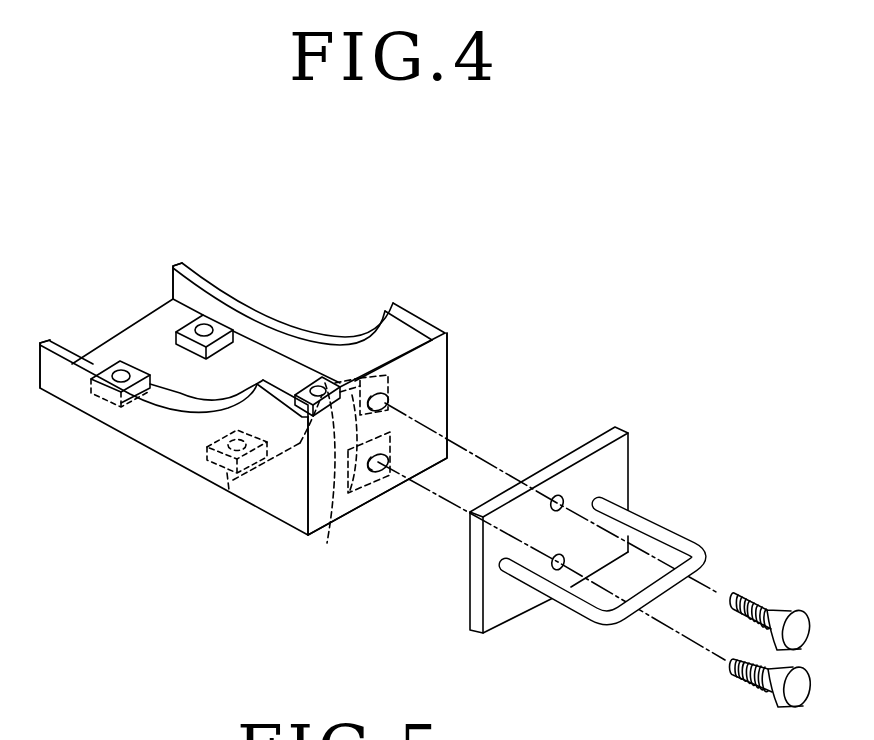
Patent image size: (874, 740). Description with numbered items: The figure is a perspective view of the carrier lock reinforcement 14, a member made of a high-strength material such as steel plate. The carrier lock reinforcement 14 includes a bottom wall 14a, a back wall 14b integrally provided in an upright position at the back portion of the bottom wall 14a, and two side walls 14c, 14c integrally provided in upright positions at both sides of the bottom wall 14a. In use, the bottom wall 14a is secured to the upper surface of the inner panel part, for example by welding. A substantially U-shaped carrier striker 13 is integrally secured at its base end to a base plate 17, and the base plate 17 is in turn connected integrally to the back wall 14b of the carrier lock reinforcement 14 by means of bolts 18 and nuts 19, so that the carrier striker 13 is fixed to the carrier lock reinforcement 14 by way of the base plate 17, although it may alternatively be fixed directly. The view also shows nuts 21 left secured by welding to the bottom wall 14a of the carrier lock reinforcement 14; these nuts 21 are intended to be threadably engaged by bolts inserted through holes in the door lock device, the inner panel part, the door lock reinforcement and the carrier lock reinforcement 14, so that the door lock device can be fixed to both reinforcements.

The carrier striker 13 is at (677, 548).
The carrier lock reinforcement 14 is at (272, 398).
The bottom wall 14a is at (138, 337).
The back wall 14b is at (430, 397).
The side walls 14c is at (253, 300).
The base plate 17 is at (628, 480).
The bolts 18 is at (754, 627).
The nuts 19 is at (327, 543).
The nuts 21 is at (130, 370).